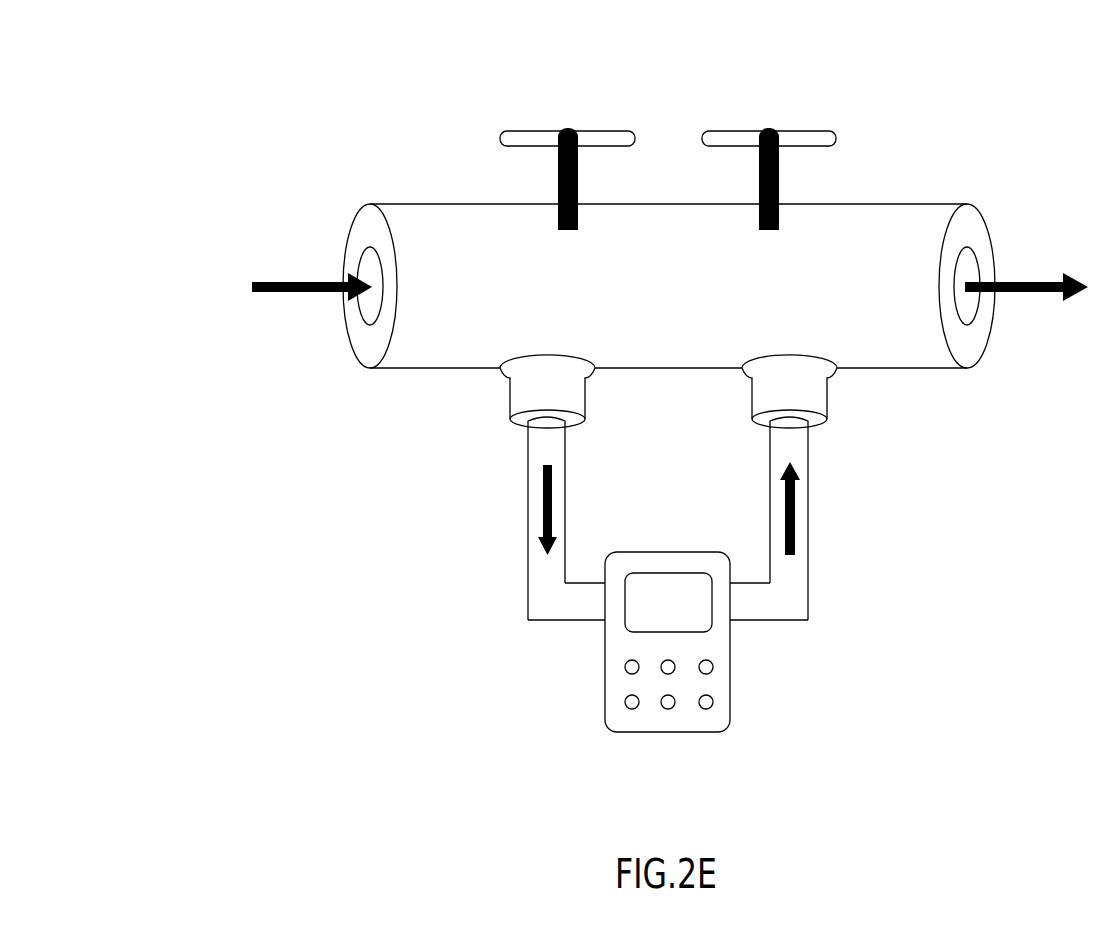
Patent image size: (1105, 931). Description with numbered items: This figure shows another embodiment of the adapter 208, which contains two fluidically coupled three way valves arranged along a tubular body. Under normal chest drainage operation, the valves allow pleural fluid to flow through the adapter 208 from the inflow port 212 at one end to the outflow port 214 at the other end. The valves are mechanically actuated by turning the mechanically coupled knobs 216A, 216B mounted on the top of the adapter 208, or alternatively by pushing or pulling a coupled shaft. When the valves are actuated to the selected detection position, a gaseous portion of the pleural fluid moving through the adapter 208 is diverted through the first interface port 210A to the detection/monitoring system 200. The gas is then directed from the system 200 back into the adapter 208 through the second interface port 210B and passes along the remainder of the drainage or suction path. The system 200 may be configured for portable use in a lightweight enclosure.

The adapter 208 is at (123, 62).
The inflow port 212 is at (368, 270).
The outflow port 214 is at (968, 272).
The knob 216A is at (605, 128).
The knob 216B is at (806, 128).
The first interface port 210A is at (527, 422).
The second interface port 210B is at (810, 422).
The detection/monitoring system 200 is at (605, 682).